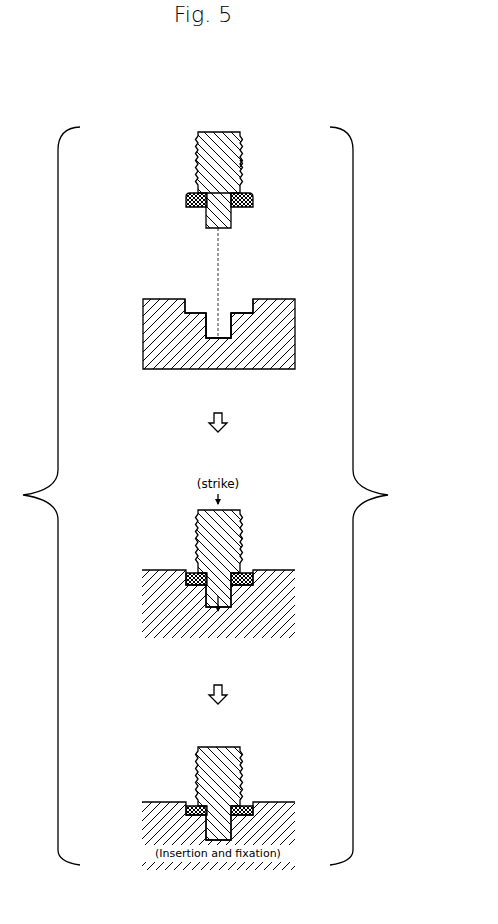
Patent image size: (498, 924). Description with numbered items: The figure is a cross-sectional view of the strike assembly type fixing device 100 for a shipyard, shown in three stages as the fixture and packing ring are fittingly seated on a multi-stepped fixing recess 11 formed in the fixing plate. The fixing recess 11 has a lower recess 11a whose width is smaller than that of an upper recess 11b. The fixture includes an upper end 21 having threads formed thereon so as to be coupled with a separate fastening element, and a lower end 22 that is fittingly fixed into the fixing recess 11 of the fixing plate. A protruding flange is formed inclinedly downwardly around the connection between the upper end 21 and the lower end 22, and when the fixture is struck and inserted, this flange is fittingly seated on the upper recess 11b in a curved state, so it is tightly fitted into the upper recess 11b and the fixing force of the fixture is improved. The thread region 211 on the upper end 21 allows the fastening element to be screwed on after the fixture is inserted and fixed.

The strike assembly type fixing device 100 is at (128, 118).
The fixing recess 11 is at (267, 256).
The lower recess 11a is at (227, 317).
The upper recess 11b is at (243, 309).
The upper end 21 is at (237, 142).
The thread 211 is at (238, 163).
The lower end 22 is at (232, 216).